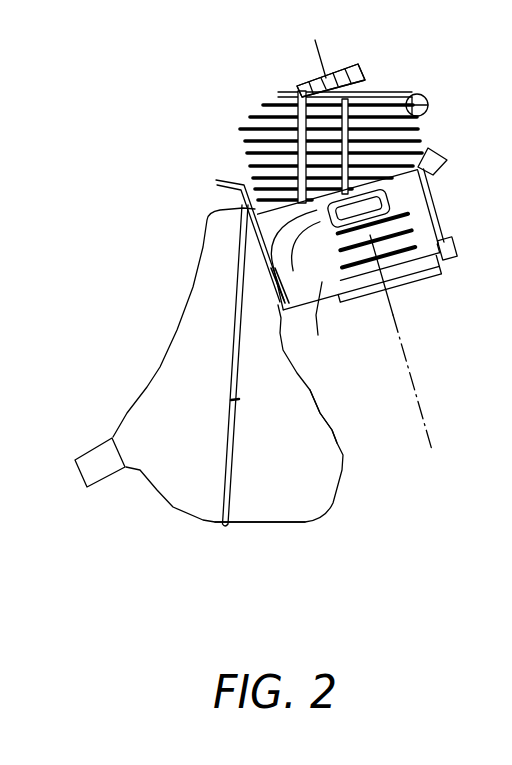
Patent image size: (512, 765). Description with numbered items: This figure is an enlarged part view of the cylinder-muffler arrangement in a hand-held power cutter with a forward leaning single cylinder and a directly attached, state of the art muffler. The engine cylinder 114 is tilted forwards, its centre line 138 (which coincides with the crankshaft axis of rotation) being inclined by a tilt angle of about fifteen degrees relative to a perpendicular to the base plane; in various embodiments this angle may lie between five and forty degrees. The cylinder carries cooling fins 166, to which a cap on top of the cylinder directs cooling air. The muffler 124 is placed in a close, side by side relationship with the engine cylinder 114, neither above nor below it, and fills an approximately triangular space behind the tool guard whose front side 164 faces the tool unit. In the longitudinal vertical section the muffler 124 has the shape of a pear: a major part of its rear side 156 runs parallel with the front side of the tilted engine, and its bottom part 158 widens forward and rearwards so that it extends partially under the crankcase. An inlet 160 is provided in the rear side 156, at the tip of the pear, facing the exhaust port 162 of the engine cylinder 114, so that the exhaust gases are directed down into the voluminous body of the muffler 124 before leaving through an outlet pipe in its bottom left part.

The engine cylinder 114 is at (373, 87).
The muffler 124 is at (163, 366).
The centre line of the engine cylinder 138 is at (405, 363).
The rear side of the muffler 156 is at (332, 430).
The bottom part of the muffler 158 is at (275, 523).
The inlet 160 is at (260, 237).
The exhaust port 162 is at (323, 321).
The front side 164 is at (107, 480).
The cooling fins 166 is at (275, 97).